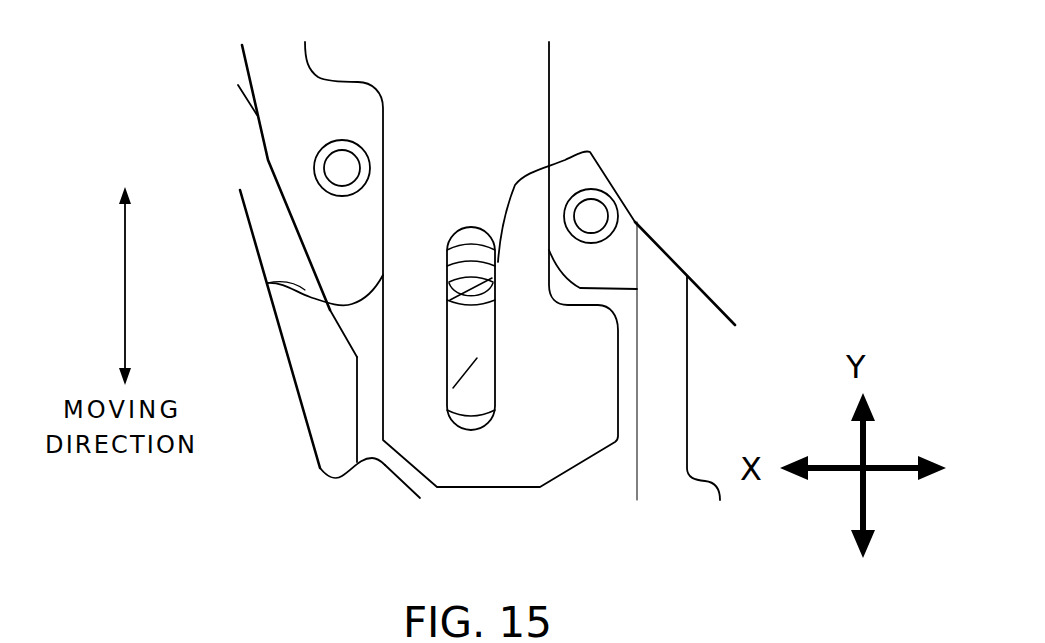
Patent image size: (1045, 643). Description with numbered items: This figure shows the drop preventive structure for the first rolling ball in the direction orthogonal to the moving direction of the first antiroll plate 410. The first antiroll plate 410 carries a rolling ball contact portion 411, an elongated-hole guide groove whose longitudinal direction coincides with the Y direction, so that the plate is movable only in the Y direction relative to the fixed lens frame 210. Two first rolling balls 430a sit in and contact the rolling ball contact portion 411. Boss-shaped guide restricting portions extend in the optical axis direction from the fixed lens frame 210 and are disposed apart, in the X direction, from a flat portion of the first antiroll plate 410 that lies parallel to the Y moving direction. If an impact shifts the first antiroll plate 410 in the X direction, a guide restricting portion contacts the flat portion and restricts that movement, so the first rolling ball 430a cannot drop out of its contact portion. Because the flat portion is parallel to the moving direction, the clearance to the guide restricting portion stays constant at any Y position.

The first antiroll plate 410 is at (450, 187).
The rolling ball contact portion (second groove) 411 is at (552, 190).
The fixed lens frame 210 is at (600, 268).
The first rolling ball 430a is at (452, 413).